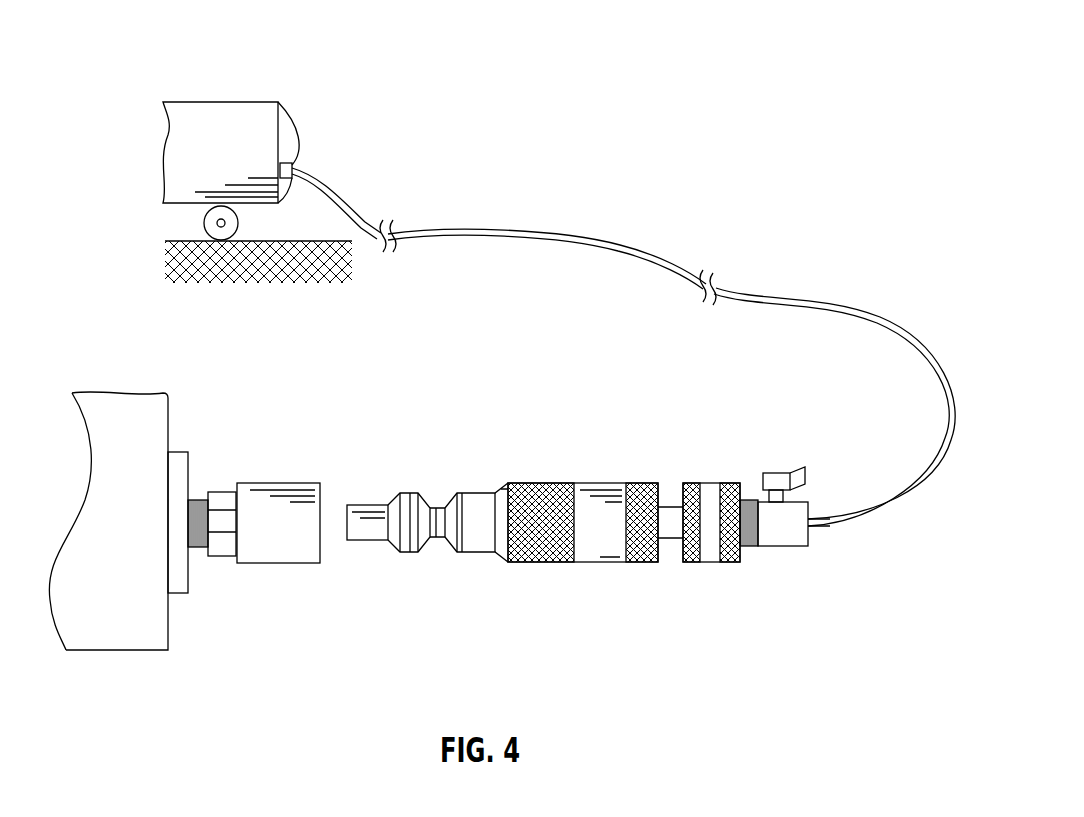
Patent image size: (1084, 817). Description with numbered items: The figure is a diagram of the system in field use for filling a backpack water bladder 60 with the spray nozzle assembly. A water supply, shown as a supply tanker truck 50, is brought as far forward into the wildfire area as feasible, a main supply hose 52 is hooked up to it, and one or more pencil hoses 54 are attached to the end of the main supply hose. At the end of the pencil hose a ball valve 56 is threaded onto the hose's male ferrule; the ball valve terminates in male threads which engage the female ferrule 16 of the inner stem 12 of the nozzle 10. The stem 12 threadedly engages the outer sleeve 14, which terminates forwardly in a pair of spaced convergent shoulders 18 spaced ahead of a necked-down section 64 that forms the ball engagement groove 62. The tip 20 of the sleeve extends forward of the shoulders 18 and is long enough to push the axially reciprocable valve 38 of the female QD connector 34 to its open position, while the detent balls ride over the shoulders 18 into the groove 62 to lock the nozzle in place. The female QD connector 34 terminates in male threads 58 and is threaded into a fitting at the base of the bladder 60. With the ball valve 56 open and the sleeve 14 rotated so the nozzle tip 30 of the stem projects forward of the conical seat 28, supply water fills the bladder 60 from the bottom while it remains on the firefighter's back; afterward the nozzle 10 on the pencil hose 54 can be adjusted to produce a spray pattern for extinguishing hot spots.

The nozzle 10 is at (572, 525).
The inner stem 12 is at (667, 540).
The outer sleeve 14 is at (580, 483).
The female threaded ferrule 16 is at (723, 483).
The shoulders 18 is at (408, 492).
The tip 20 is at (368, 541).
The conical seat 28 is at (348, 520).
The nozzle tip 30 is at (362, 520).
The female QD connector 34 is at (268, 562).
The axially reciprocable valve 38 is at (356, 549).
The supply tanker truck 50 is at (235, 166).
The main supply hose 52 is at (327, 185).
The pencil hose 54 is at (887, 573).
The ball valve 56 is at (772, 546).
The male threads 58 is at (199, 500).
The bladder 60 is at (152, 422).
The ball engagement groove 62 is at (431, 495).
The necked-down section 64 is at (483, 493).